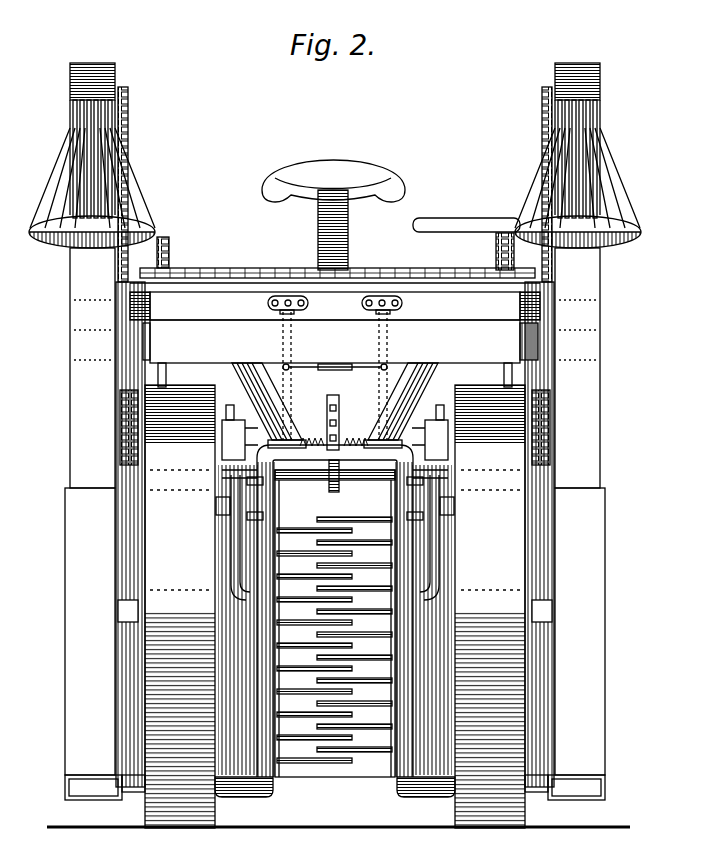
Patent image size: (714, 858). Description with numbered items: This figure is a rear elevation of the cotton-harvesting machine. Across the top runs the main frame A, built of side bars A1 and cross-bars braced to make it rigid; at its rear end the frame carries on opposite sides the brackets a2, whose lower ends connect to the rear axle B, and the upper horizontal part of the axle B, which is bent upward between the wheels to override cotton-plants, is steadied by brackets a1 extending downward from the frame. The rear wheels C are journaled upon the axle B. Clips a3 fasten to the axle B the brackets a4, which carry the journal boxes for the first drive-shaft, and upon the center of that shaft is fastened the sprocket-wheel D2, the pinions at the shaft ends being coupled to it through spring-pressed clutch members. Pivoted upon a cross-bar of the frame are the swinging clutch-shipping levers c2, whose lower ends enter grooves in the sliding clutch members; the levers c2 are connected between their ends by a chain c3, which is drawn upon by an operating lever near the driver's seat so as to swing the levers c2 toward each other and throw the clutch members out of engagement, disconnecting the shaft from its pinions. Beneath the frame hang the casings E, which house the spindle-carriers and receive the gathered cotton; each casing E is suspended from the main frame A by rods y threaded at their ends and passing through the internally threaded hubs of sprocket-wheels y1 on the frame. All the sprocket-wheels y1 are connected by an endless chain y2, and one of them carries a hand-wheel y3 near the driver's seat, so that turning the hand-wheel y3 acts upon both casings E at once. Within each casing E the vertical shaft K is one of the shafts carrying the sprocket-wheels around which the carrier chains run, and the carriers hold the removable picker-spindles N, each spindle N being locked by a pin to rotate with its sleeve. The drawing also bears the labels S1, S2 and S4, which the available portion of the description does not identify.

The standard column S1 is at (335, 431).
The conical cap S2 is at (140, 200).
The rack bar S4 is at (335, 184).
The sprocket-wheel y1 is at (165, 272).
The endless chain y2 is at (374, 270).
The hand-wheel y3 is at (445, 222).
The main frame A is at (335, 307).
The side bar A1 is at (150, 306).
The clutch-shipping lever c2 is at (300, 311).
The chain c3 is at (335, 378).
The bracket a1 is at (282, 403).
The sprocket-wheel D2 is at (335, 586).
The bracket a4 is at (240, 420).
The rod y is at (167, 378).
The shaft K is at (222, 506).
The rear wheel C is at (335, 606).
The rear axle B is at (245, 563).
The bracket a2 is at (132, 536).
The clip a3 is at (270, 513).
The picker-spindle N is at (364, 545).
The casing E is at (392, 762).